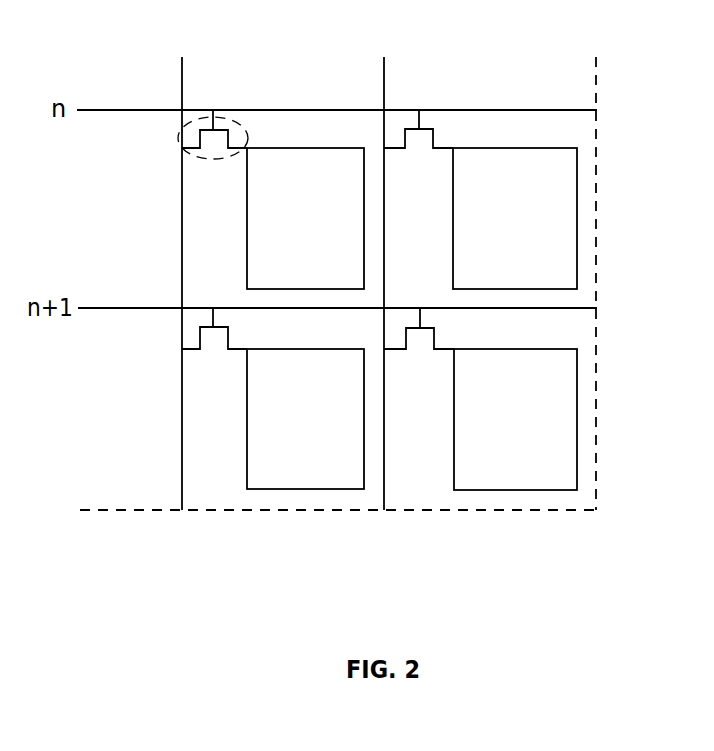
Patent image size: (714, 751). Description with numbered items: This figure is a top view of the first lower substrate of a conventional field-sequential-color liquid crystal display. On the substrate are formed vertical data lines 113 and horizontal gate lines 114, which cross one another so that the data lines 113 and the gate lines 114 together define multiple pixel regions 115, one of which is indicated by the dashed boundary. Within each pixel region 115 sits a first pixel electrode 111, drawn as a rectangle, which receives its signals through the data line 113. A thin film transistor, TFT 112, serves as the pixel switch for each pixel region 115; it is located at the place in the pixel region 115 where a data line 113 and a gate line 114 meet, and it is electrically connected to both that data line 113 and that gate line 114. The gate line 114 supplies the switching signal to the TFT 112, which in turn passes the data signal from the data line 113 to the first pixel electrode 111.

The first pixel electrode 111 is at (262, 222).
The TFT 112 is at (244, 124).
The data line 113 is at (182, 423).
The gate line 114 is at (125, 308).
The pixel region 115 is at (408, 473).